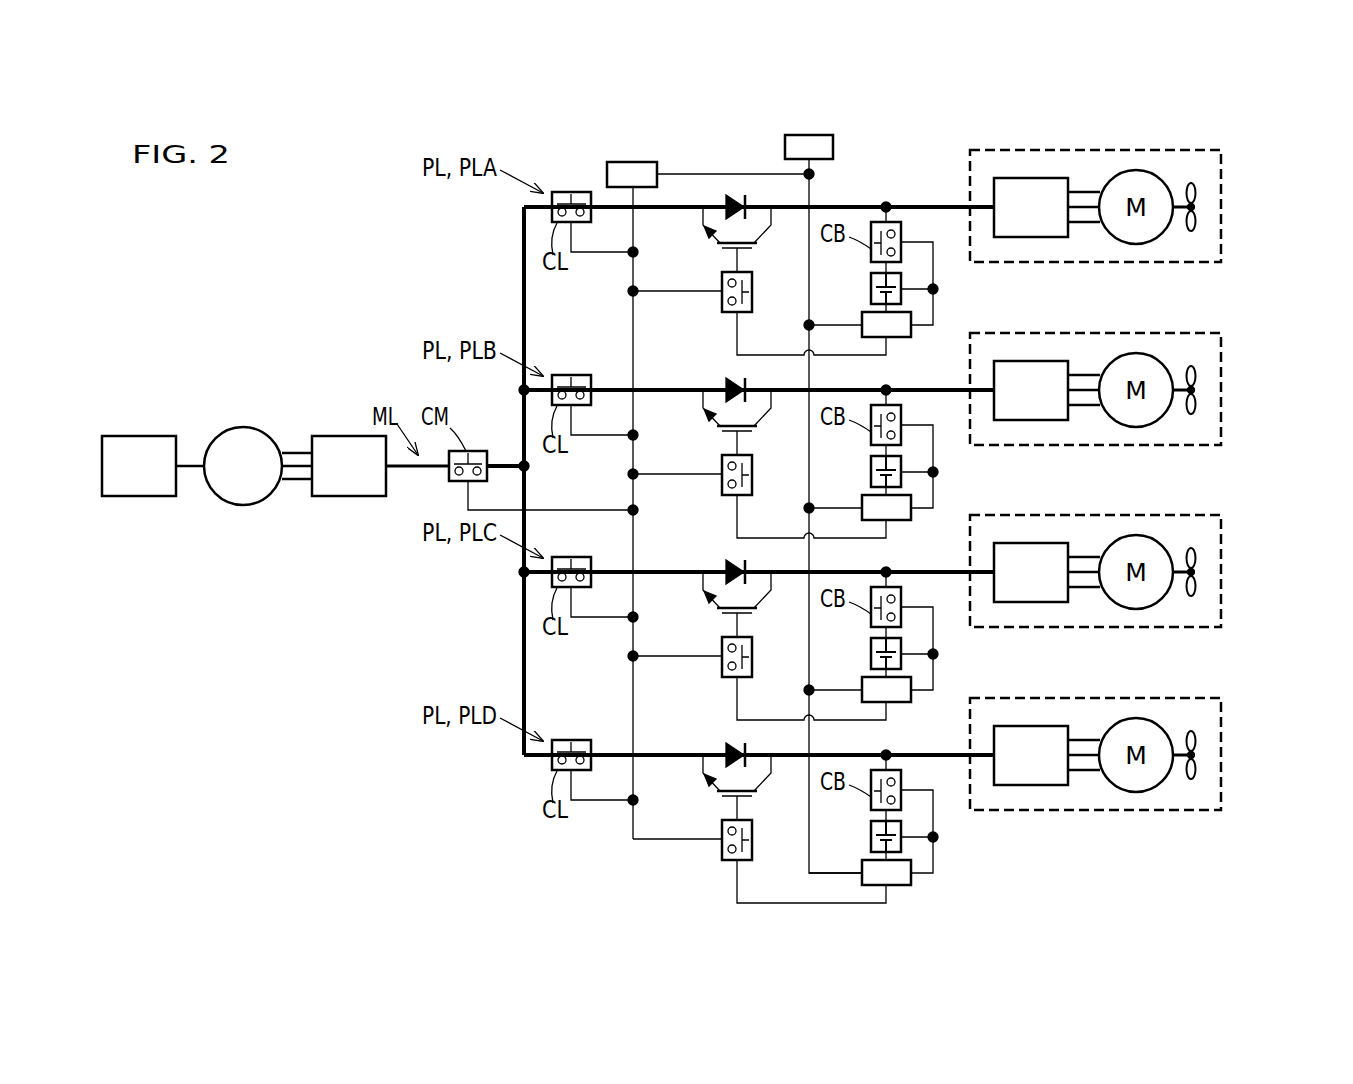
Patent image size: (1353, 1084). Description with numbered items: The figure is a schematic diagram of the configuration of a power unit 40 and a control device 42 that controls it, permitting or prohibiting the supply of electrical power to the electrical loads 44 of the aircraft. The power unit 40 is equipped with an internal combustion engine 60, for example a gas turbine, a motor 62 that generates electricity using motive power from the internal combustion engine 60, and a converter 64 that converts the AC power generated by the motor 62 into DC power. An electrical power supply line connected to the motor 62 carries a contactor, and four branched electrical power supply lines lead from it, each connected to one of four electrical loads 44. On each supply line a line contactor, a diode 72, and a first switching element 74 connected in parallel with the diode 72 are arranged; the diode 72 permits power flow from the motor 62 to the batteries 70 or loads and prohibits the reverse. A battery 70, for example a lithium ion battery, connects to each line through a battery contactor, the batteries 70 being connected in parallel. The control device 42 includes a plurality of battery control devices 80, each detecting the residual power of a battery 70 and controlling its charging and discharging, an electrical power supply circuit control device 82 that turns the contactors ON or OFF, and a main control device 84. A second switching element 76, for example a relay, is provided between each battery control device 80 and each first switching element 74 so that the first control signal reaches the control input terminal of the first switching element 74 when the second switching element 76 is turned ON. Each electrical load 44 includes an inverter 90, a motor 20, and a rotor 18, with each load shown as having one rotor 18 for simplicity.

The power unit 40 is at (240, 293).
The control device 42 is at (847, 128).
The internal combustion engine 60 is at (128, 436).
The motor 62 is at (244, 428).
The converter 64 is at (341, 436).
The electrical power supply circuit control device 82 is at (622, 162).
The main control device 84 is at (803, 135).
The diode 72 is at (733, 194).
The first switching element 74 is at (718, 246).
The second switching element 76 is at (722, 306).
The battery 70 is at (903, 295).
The battery control device 80 is at (897, 338).
The electrical load 44 is at (1193, 147).
The inverter 90 is at (1030, 178).
The motor 20 is at (1134, 170).
The rotor 18 is at (1196, 215).